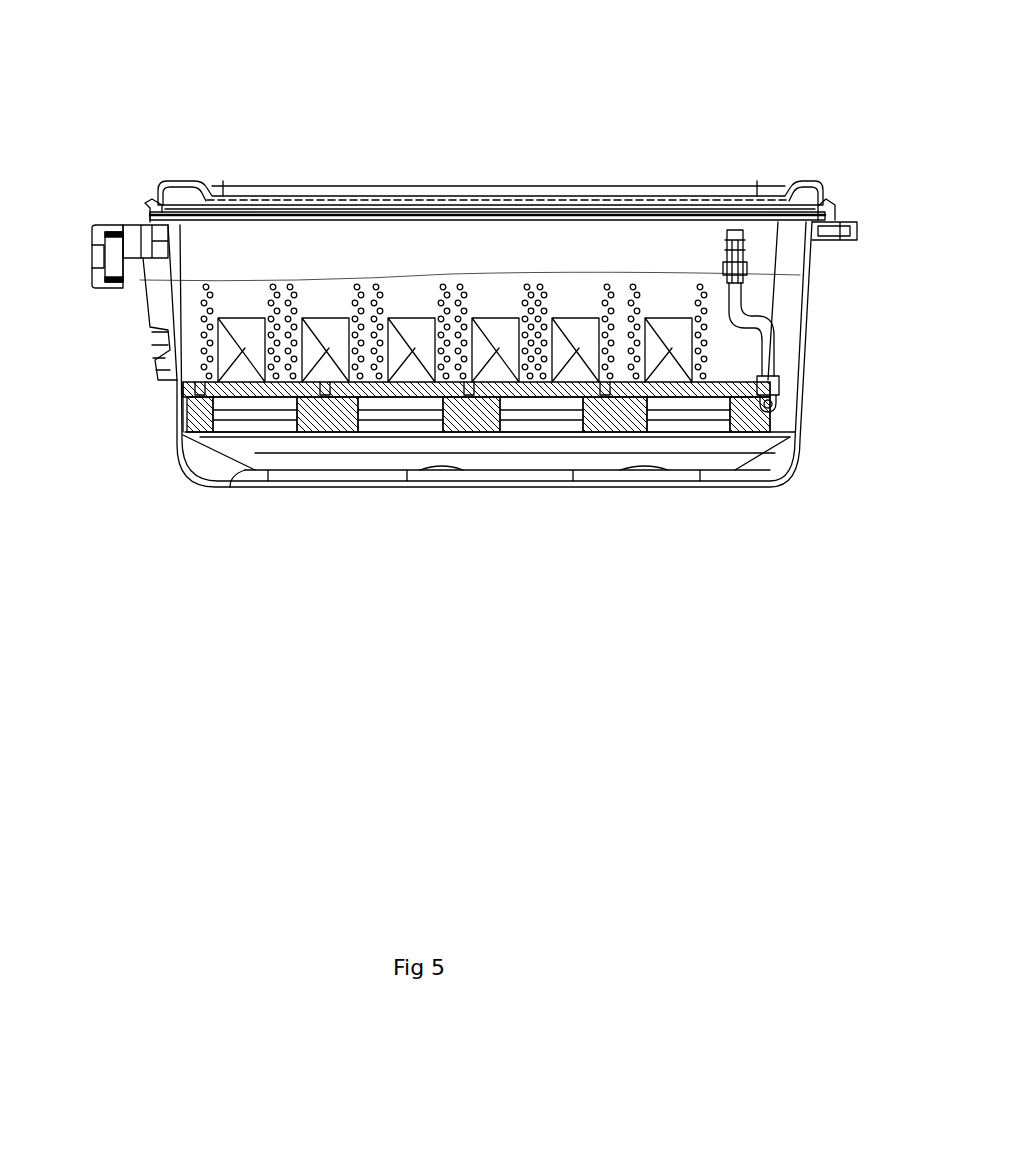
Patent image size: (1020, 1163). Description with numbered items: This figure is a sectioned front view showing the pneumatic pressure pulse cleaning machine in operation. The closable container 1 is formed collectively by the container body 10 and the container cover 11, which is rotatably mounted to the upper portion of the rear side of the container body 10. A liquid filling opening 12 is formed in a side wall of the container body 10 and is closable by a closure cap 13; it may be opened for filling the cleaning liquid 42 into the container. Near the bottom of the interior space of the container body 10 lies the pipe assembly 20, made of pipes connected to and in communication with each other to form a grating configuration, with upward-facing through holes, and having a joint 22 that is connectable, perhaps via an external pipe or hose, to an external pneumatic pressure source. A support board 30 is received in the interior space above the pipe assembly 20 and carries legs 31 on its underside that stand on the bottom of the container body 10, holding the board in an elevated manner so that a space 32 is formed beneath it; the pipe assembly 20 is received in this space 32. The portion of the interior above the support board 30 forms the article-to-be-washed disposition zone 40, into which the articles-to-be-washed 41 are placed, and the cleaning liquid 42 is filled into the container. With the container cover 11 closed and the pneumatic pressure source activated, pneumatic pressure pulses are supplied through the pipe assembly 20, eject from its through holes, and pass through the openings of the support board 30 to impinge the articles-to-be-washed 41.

The closable container 1 is at (670, 146).
The container body 10 is at (667, 492).
The container cover 11 is at (478, 196).
The liquid filling opening 12 is at (120, 262).
The closure cap 13 is at (92, 262).
The pipe assembly 20 is at (743, 480).
The joint 22 is at (738, 258).
The support board 30 is at (713, 381).
The legs 31 is at (617, 430).
The space 32 is at (698, 405).
The article-to-be-washed disposition zone 40 is at (455, 370).
The articles-to-be-washed 41 is at (492, 372).
The cleaning liquid 42 is at (252, 284).